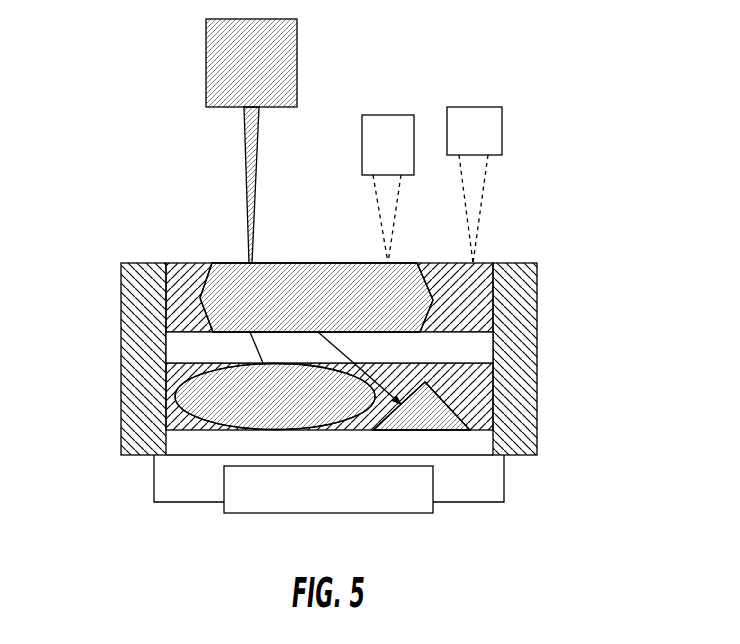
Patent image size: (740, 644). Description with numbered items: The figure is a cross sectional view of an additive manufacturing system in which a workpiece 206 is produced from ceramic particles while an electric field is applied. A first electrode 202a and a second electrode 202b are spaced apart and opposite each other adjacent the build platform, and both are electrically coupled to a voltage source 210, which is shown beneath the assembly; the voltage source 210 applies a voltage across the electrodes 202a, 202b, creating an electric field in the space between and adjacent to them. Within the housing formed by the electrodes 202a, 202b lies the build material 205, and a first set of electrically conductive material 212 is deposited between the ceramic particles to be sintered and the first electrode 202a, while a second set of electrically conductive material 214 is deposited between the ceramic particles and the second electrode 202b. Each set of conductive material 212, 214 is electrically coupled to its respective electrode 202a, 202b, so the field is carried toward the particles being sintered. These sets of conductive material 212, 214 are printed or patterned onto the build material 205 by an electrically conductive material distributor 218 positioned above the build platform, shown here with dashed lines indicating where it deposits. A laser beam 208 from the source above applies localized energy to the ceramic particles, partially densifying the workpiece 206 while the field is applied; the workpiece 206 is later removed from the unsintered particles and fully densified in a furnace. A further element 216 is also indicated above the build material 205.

The first electrode 202a is at (134, 460).
The second electrode 202b is at (522, 460).
The second set of electrically conductive material 214 is at (459, 396).
The build material 205 is at (476, 352).
The workpiece 206 is at (240, 261).
The first set of electrically conductive material 212 is at (177, 308).
The laser beam 208 is at (206, 67).
The sensor 216 is at (407, 158).
The electrically conductive material distributor 218 is at (493, 145).
The voltage source 210 is at (350, 503).